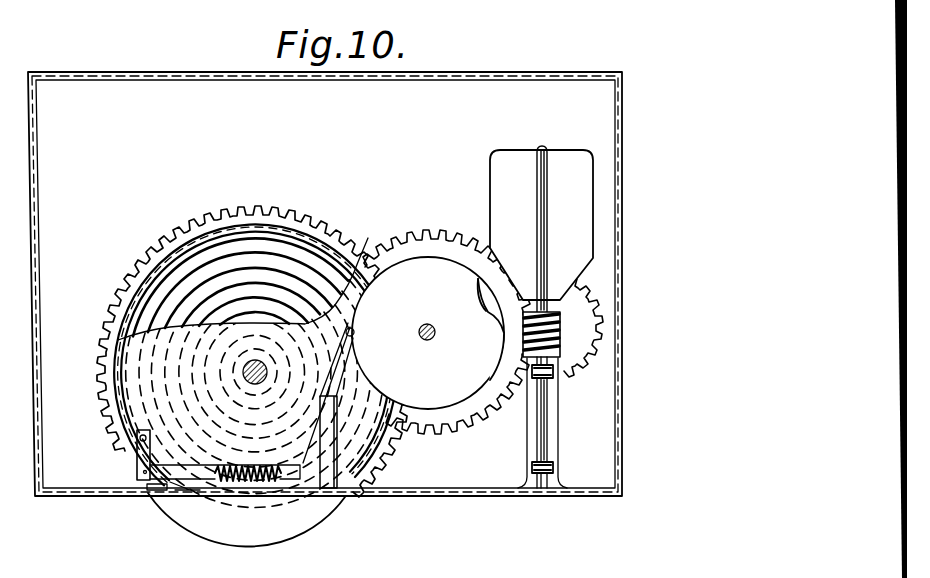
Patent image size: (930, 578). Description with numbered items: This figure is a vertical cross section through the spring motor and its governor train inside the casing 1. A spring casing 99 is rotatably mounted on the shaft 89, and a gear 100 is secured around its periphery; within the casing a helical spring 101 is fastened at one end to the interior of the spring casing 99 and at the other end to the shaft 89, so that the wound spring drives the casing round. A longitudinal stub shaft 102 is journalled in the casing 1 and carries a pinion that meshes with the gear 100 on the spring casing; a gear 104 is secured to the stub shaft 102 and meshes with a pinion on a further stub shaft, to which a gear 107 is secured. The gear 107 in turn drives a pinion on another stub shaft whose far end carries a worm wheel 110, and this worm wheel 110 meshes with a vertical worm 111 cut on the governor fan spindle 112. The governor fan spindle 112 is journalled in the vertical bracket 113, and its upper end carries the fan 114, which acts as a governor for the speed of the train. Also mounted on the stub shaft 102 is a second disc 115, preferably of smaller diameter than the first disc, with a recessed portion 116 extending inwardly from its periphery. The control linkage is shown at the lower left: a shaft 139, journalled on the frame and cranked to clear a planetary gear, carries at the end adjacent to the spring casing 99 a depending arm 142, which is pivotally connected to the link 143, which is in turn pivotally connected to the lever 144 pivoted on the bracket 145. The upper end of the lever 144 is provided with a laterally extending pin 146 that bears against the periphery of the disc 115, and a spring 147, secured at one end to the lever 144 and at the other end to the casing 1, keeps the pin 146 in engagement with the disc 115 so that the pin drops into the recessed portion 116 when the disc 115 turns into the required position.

The casing 1 is at (30, 377).
The shaft 89 is at (243, 378).
The spring casing 99 is at (322, 226).
The gear 100 is at (287, 213).
The helical spring 101 is at (262, 243).
The stub shaft 102 is at (426, 324).
The gear 104 is at (430, 241).
The gear 107 is at (590, 295).
The worm wheel 110 is at (500, 352).
The vertical worm 111 is at (557, 349).
The governor fan spindle 112 is at (546, 252).
The vertical bracket 113 is at (553, 420).
The fan 114 is at (541, 225).
The second disc 115 is at (428, 333).
The recessed portion 116 is at (478, 318).
The shaft 139 is at (135, 440).
The depending arm 142 is at (137, 453).
The link 143 is at (152, 489).
The lever 144 is at (333, 361).
The bracket 145 is at (338, 477).
The pin 146 is at (355, 332).
The spring 147 is at (232, 484).